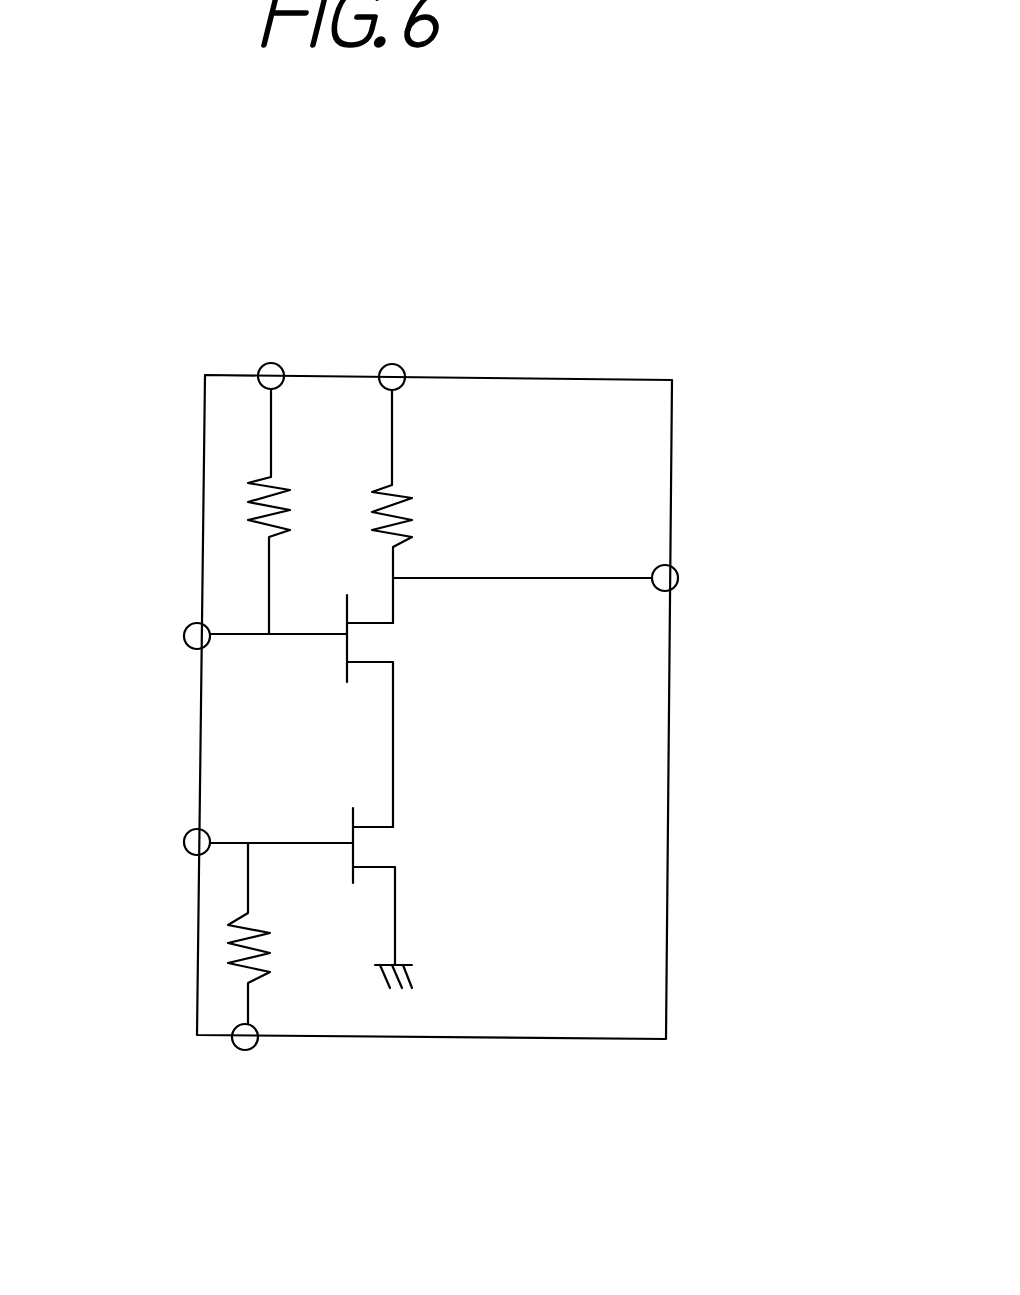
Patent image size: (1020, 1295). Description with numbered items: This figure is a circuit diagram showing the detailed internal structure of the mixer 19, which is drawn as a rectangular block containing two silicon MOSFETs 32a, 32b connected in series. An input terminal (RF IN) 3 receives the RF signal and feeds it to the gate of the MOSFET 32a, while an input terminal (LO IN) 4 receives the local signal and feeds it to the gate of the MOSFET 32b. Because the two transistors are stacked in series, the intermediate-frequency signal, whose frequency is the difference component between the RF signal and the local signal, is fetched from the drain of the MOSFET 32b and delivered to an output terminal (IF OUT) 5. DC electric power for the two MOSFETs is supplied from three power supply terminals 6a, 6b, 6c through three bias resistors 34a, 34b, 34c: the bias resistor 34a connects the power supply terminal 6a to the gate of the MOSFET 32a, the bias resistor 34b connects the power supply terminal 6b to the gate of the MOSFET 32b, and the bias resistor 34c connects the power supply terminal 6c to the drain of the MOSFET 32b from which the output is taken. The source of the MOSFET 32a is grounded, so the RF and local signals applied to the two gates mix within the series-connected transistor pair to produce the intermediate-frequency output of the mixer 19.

The input terminal (RF IN) 3 is at (186, 856).
The input terminal (LO IN) 4 is at (191, 623).
The output terminal (IF OUT) 5 is at (677, 587).
The power supply terminal 6a is at (255, 1045).
The power supply terminal 6b is at (261, 367).
The power supply terminal 6c is at (405, 369).
The mixer 19 is at (667, 942).
The silicon MOSFET 32a is at (378, 847).
The silicon MOSFET 32b is at (387, 645).
The bias resistor 34a is at (255, 928).
The bias resistor 34b is at (276, 492).
The bias resistor 34c is at (395, 495).